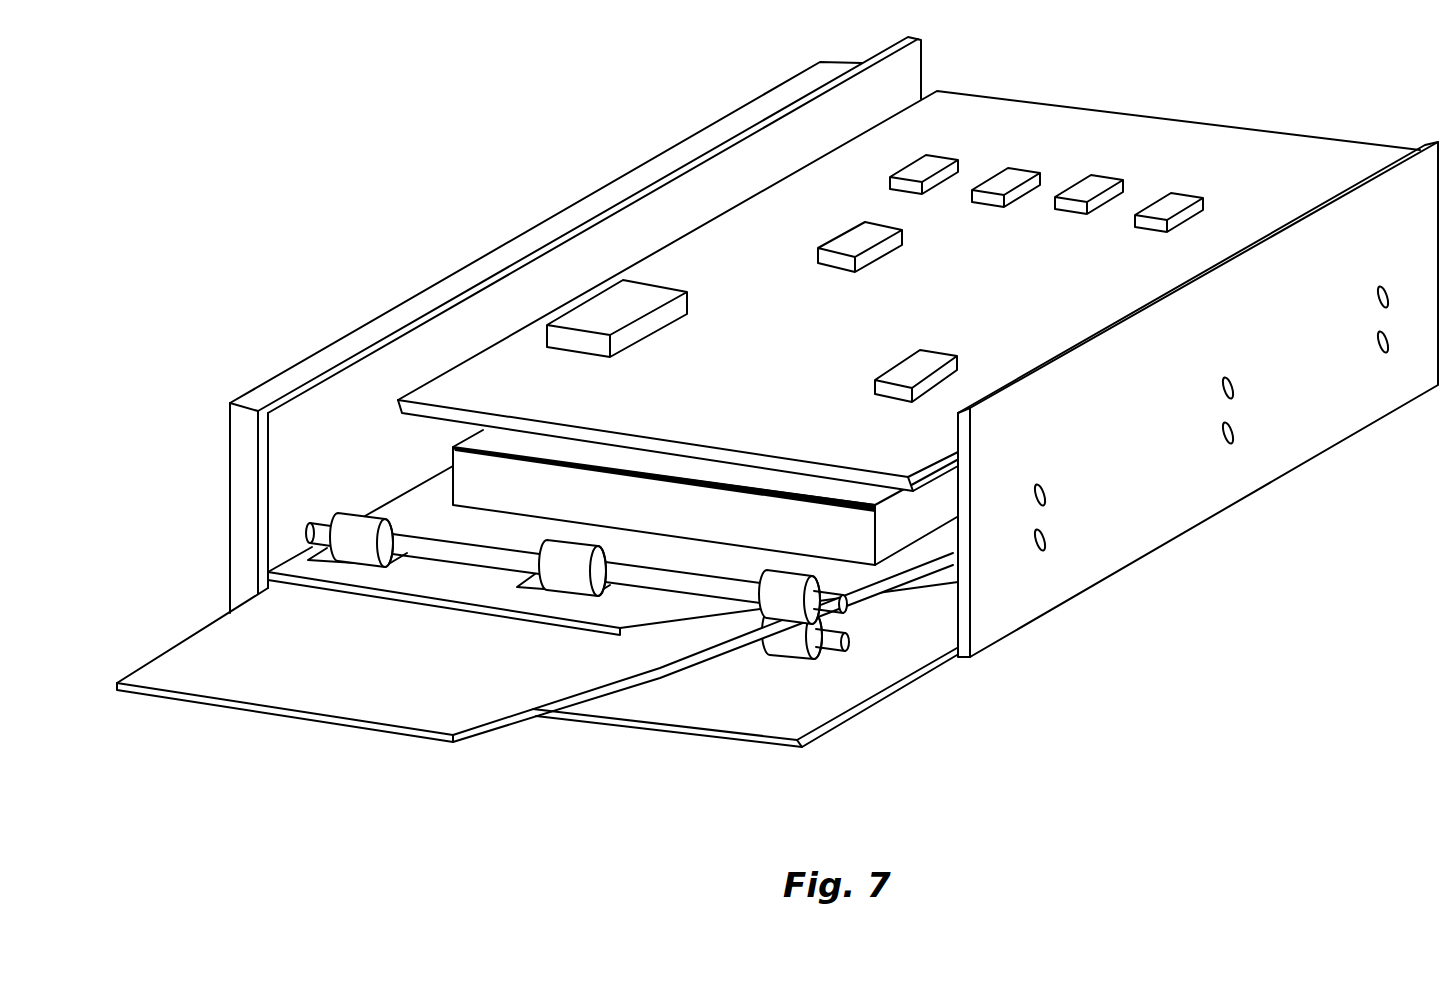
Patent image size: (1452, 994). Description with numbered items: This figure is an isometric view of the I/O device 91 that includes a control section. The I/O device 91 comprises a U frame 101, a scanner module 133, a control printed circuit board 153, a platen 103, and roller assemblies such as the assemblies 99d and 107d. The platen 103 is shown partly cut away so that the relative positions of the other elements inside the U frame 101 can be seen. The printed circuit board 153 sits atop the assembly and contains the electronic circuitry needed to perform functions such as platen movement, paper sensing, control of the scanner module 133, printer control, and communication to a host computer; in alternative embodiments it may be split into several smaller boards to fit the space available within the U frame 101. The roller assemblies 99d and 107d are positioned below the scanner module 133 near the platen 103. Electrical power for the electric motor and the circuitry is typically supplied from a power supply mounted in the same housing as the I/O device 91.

The I/O device 91 is at (457, 116).
The U frame 101 is at (1418, 140).
The printed circuit board 153 is at (965, 120).
The scanner module 133 is at (470, 487).
The roller assembly 99d is at (790, 583).
The roller assembly 107d is at (797, 645).
The platen 103 is at (500, 692).